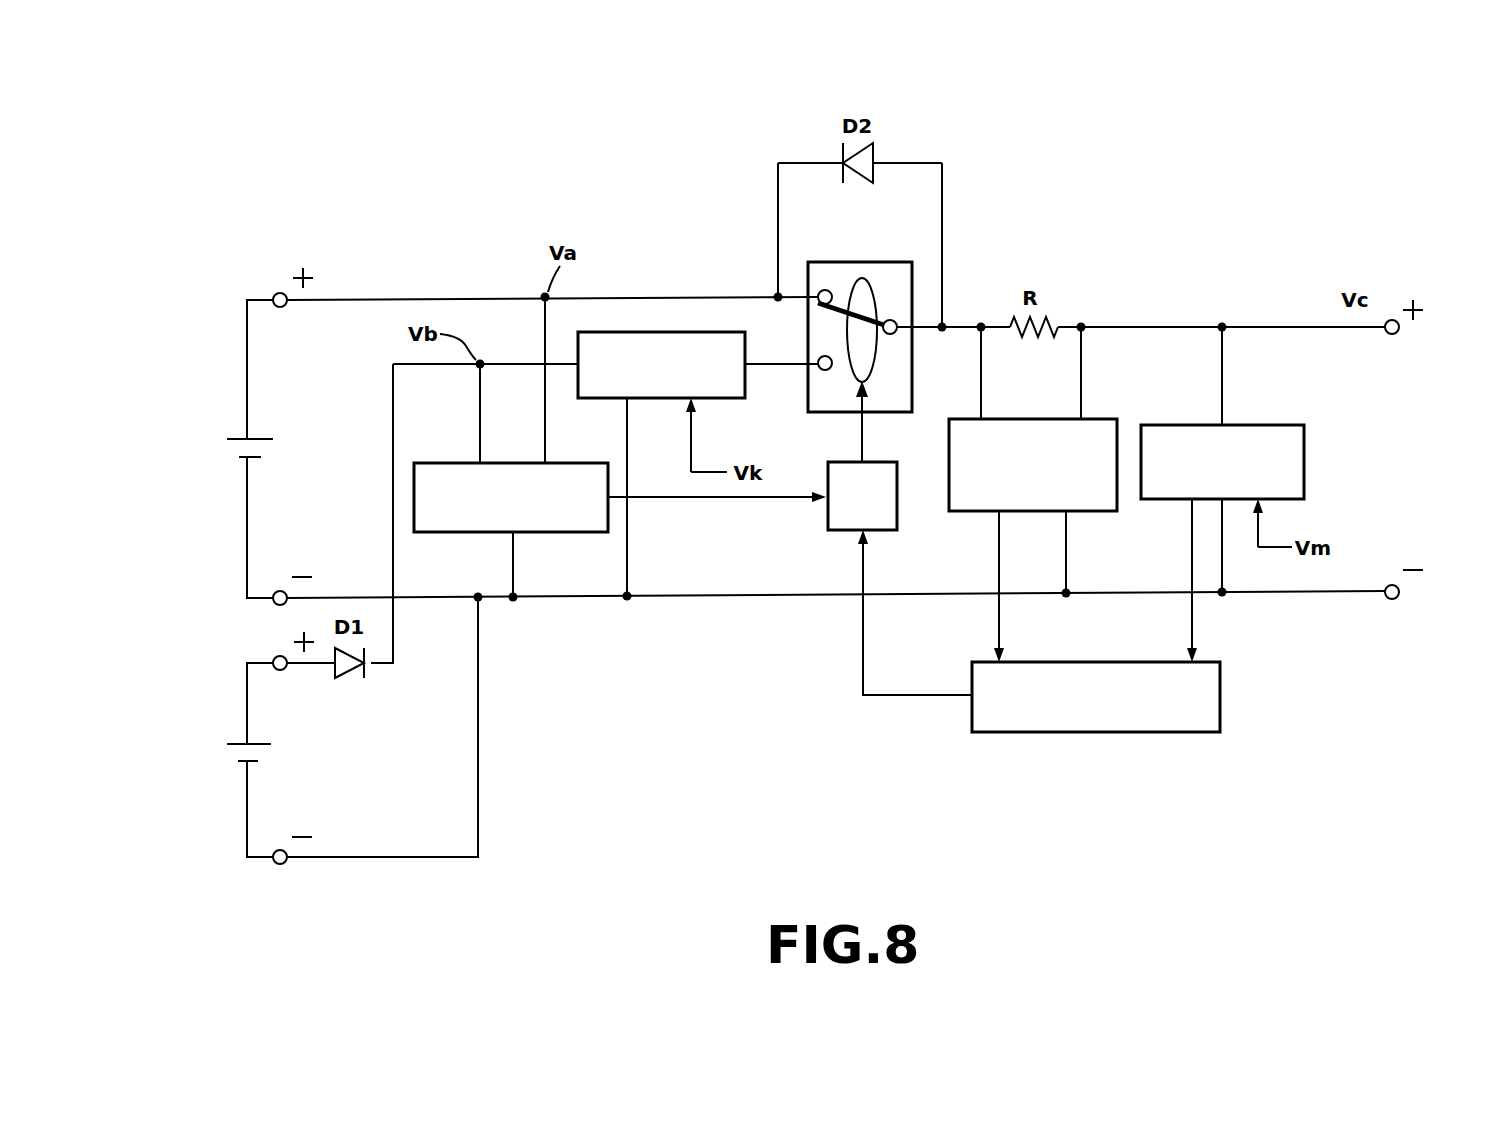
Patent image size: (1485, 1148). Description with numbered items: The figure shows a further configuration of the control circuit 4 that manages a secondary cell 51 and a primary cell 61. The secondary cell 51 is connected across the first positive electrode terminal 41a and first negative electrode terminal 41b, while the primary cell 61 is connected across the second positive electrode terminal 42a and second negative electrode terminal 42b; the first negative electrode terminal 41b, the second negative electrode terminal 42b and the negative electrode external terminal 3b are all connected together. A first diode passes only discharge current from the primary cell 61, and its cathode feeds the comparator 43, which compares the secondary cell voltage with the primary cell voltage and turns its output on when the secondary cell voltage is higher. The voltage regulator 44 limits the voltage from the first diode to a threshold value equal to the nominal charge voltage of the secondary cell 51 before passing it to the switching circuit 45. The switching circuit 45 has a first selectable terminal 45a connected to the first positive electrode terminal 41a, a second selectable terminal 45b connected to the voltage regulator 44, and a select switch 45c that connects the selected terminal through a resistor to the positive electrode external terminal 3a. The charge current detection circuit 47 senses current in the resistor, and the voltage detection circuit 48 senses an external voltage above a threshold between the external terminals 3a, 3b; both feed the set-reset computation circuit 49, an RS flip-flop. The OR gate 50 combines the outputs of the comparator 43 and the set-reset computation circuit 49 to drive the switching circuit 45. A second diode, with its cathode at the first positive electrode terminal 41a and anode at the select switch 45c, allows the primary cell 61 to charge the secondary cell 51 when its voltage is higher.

The positive electrode external terminal 3a is at (1398, 333).
The negative electrode external terminal 3b is at (1398, 598).
The control circuit 4 is at (1383, 690).
The first positive electrode terminal 41a is at (280, 292).
The first negative electrode terminal 41b is at (283, 591).
The second positive electrode terminal 42a is at (283, 670).
The second negative electrode terminal 42b is at (283, 850).
The comparator 43 is at (453, 463).
The voltage regulator 44 is at (596, 398).
The switching circuit 45 is at (886, 414).
The first selectable terminal 45a is at (823, 288).
The second selectable terminal 45b is at (821, 372).
The select switch 45c is at (875, 280).
The charge current detection circuit 47 is at (1025, 418).
The voltage detection circuit 48 is at (1262, 425).
The set-reset computation circuit 49 is at (1222, 686).
The OR gate 50 is at (840, 532).
The secondary cell 51 is at (236, 436).
The primary cell 61 is at (234, 743).